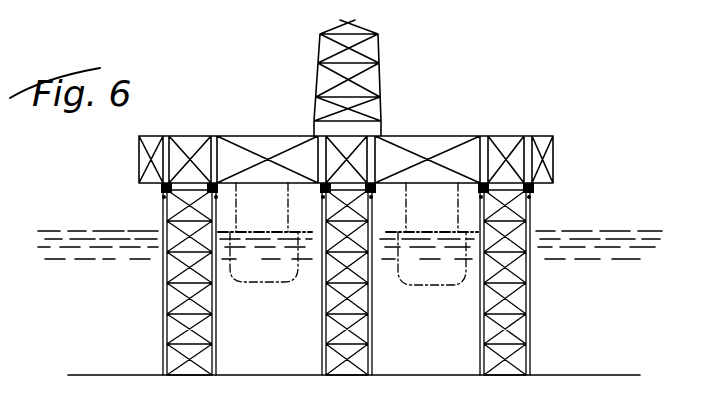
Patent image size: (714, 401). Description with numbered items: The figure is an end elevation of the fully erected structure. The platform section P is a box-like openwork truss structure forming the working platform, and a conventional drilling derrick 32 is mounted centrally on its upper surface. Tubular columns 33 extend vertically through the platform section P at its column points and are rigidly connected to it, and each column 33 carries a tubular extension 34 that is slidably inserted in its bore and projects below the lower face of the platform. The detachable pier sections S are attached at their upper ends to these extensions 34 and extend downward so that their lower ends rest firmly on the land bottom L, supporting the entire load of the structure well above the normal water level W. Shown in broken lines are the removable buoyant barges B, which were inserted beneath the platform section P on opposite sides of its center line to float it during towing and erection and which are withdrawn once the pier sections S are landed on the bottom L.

The drilling derrick 32 is at (379, 53).
The tubular column 33 is at (163, 136).
The tubular extension 34 is at (162, 187).
The pier section S is at (162, 304).
The platform section P is at (510, 133).
The land bottom L is at (110, 375).
The water level W is at (75, 231).
The barge B is at (260, 280).